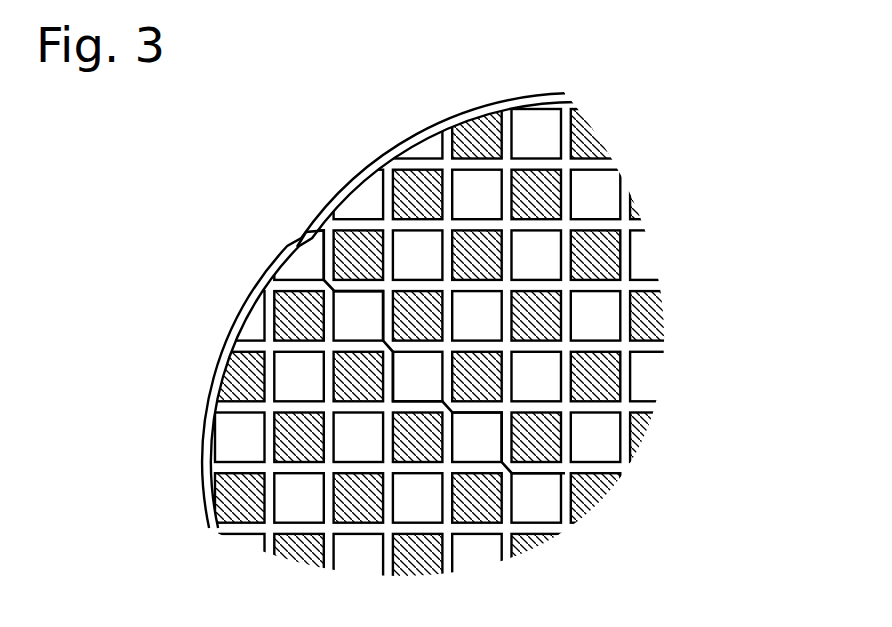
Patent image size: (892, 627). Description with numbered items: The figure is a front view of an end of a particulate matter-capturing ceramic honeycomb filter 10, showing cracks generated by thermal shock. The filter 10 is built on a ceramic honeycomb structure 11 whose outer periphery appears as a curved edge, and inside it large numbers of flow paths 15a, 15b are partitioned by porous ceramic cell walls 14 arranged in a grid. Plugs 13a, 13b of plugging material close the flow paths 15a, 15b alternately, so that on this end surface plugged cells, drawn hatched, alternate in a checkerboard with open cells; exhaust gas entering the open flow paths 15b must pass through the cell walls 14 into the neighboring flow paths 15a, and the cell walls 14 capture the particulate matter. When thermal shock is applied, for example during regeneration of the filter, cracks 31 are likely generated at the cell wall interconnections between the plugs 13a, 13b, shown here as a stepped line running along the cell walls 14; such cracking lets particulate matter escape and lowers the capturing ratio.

The ceramic honeycomb filter 10 is at (238, 167).
The ceramic honeycomb structure 11 is at (347, 192).
The cell walls 14 is at (415, 223).
The cracks 31 is at (383, 346).
The plug 13a is at (597, 258).
The plug 13b is at (685, 254).
The flow path 15a is at (602, 310).
The flow path 15b is at (690, 316).